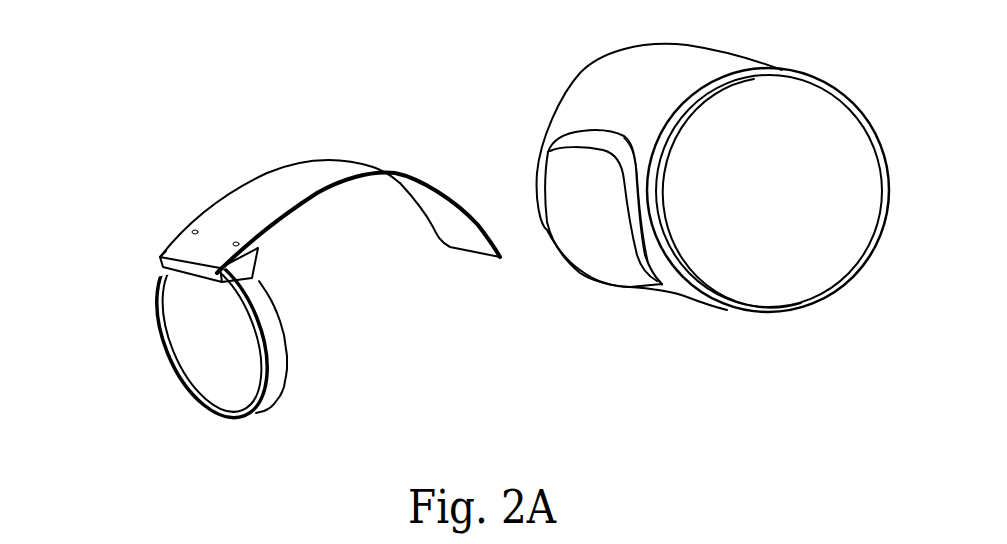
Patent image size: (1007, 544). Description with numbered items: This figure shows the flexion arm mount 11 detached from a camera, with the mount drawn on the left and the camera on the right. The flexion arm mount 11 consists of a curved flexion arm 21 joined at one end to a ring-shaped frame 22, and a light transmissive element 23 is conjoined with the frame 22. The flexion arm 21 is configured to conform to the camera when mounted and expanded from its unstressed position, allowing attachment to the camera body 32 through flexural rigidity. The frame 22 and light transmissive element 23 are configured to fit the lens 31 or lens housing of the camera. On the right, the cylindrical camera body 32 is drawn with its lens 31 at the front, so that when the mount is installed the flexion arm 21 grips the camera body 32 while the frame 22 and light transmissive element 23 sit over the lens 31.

The flexion arm mount 11 is at (212, 204).
The flexion arm 21 is at (452, 228).
The frame 22 is at (267, 406).
The light transmissive element 23 is at (203, 365).
The lens 31 is at (600, 248).
The camera body 32 is at (598, 82).